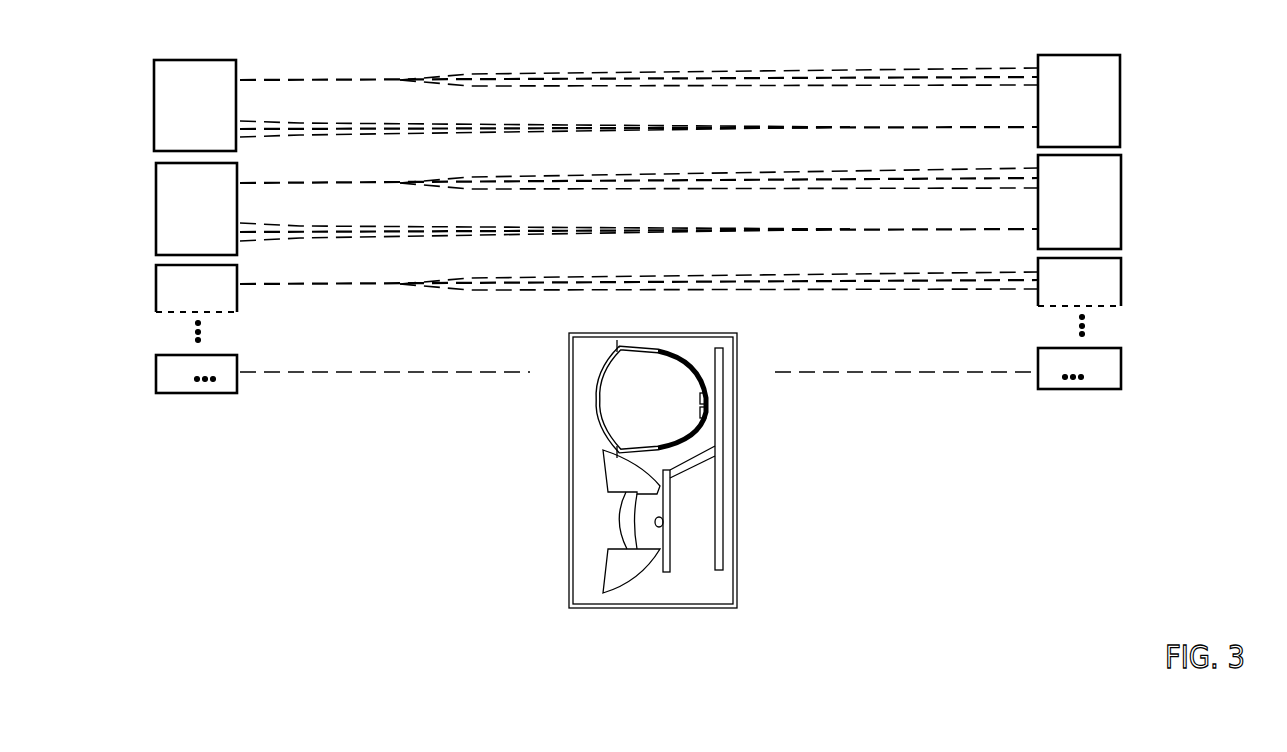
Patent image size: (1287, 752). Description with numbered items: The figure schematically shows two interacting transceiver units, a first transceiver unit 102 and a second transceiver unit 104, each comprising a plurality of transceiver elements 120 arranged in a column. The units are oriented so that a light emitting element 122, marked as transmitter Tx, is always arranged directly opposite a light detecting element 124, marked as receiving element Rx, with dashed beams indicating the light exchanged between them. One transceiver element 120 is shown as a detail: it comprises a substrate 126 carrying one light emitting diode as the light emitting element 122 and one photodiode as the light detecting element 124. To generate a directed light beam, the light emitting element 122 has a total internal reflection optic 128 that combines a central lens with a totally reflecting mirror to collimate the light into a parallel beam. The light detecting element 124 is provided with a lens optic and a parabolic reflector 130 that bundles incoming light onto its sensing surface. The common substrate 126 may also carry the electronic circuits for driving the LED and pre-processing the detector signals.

The first transceiver unit 102 is at (1153, 277).
The second transceiver unit 104 is at (128, 284).
The transceiver element 120 is at (1108, 98).
The light emitting element 122 is at (200, 80).
The light detecting element 124 is at (1108, 66).
The substrate 126 is at (725, 562).
The TIR optic 128 is at (606, 568).
The parabolic reflector 130 is at (598, 420).